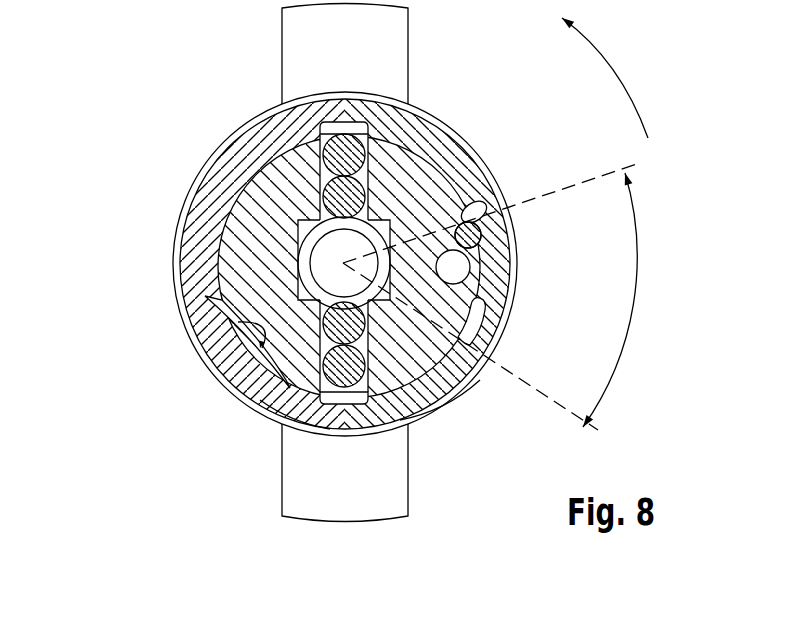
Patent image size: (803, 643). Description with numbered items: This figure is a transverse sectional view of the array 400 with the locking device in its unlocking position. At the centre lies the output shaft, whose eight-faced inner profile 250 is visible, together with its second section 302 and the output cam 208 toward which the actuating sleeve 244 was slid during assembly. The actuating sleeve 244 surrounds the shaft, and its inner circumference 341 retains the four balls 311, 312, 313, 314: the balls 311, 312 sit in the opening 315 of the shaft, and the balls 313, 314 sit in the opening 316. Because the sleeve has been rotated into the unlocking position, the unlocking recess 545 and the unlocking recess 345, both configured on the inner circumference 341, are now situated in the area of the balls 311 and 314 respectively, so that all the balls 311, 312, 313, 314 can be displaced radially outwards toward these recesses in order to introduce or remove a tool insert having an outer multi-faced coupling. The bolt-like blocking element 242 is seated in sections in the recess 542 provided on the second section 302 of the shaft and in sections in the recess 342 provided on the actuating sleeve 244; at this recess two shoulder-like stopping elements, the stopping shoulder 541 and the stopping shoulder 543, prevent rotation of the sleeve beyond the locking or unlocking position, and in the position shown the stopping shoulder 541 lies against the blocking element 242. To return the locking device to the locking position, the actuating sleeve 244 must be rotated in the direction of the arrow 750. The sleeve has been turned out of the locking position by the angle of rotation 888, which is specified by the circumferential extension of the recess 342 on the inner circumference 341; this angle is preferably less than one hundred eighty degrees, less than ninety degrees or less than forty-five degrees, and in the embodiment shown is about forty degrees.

The array 400 is at (115, 82).
The output cam 208 is at (398, 44).
The actuating sleeve 244 is at (216, 157).
The eight-faced inner profile 250 is at (372, 222).
The second section 302 is at (222, 300).
The ball 311 is at (283, 107).
The ball 312 is at (312, 183).
The ball 313 is at (262, 386).
The ball 314 is at (292, 427).
The opening 315 is at (330, 119).
The opening 316 is at (440, 402).
The inner circumference 341 is at (228, 300).
The recess 342 is at (478, 320).
The unlocking recess 345 is at (349, 405).
The unlocking recess 545 is at (345, 128).
The stopping shoulder 541 is at (476, 204).
The recess 542 is at (482, 266).
The stopping shoulder 543 is at (472, 342).
The blocking element 242 is at (488, 236).
The arrow 750 is at (623, 78).
The angle of rotation 888 is at (636, 304).